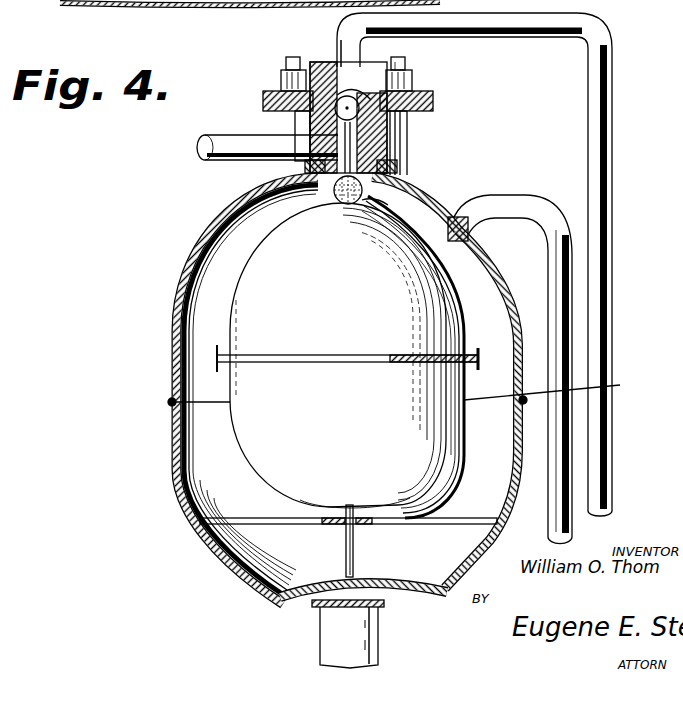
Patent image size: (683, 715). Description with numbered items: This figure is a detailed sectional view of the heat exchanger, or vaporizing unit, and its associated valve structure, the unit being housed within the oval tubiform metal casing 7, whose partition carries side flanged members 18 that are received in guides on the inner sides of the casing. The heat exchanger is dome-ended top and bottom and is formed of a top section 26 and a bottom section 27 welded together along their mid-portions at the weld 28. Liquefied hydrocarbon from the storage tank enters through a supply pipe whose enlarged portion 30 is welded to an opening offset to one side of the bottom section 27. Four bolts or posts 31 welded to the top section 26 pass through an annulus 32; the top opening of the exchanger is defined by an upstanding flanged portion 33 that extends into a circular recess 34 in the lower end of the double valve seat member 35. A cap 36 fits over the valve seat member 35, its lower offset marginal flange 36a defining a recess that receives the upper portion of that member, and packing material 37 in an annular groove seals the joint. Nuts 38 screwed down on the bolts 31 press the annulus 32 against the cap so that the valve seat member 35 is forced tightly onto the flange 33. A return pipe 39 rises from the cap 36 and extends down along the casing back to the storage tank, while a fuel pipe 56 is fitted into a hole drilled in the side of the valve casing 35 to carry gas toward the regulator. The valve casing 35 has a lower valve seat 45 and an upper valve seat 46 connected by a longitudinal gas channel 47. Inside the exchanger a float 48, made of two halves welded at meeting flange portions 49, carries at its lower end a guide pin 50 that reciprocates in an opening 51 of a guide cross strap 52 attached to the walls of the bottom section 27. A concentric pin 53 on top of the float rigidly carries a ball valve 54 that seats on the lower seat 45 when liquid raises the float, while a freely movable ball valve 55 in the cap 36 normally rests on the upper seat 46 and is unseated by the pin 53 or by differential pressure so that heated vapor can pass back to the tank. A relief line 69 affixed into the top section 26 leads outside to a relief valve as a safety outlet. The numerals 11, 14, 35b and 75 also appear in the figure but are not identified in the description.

The casing 7 is at (182, 6).
The housing 11 is at (38, 9).
The bottom closure plate 14 is at (318, 598).
The flanged members 18 is at (247, 5).
The top section 26 is at (487, 262).
The bottom section 27 is at (523, 494).
The weld 28 is at (409, 391).
The enlarged portion 30 is at (363, 636).
The bolts or posts 31 is at (300, 55).
The annulus 32 is at (433, 100).
The upstanding flanged portion 33 is at (410, 175).
The circular recess 34 is at (402, 162).
The valve seat member 35 is at (400, 148).
The sleeve portion 35b is at (432, 93).
The cap 36 is at (352, 65).
The lower offset marginal flange 36a is at (408, 122).
The packing material 37 is at (300, 120).
The nuts 38 is at (283, 82).
The return pipe 39 is at (600, 77).
The lower valve seat 45 is at (370, 197).
The upper valve seat 46 is at (333, 62).
The longitudinal gas channel 47 is at (304, 170).
The float 48 is at (367, 320).
The meeting flange portions 49 is at (217, 352).
The guide pin 50 is at (346, 548).
The opening 51 is at (397, 507).
The guide cross strap 52 is at (417, 524).
The concentric pin 53 is at (408, 156).
The ball valve 54 is at (349, 205).
The freely movable ball valve 55 is at (268, 104).
The fuel pipe 56 is at (203, 138).
The relief line 69 is at (527, 203).
The fillet 75 is at (278, 605).